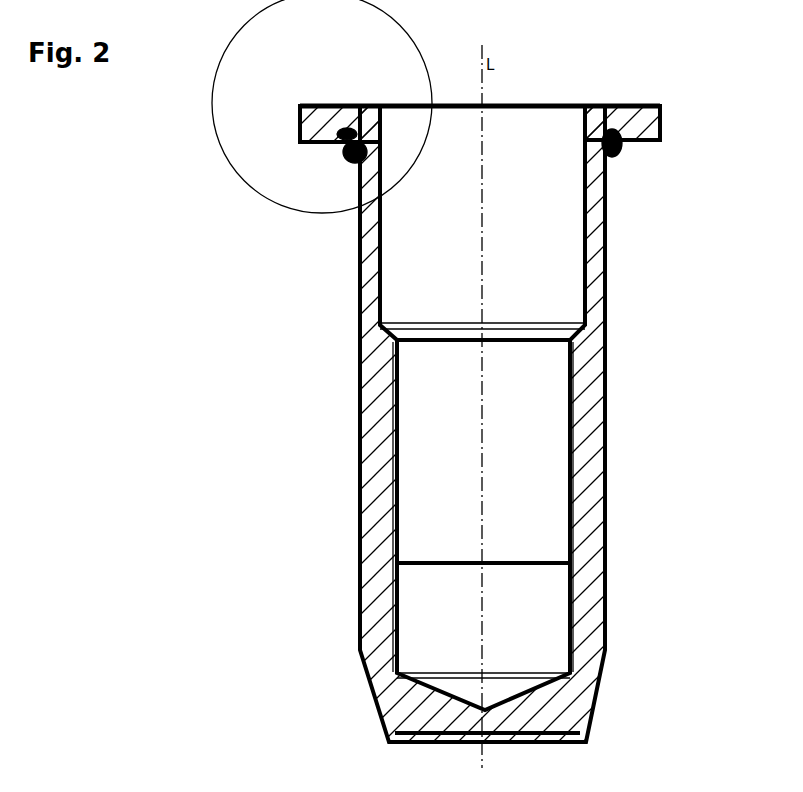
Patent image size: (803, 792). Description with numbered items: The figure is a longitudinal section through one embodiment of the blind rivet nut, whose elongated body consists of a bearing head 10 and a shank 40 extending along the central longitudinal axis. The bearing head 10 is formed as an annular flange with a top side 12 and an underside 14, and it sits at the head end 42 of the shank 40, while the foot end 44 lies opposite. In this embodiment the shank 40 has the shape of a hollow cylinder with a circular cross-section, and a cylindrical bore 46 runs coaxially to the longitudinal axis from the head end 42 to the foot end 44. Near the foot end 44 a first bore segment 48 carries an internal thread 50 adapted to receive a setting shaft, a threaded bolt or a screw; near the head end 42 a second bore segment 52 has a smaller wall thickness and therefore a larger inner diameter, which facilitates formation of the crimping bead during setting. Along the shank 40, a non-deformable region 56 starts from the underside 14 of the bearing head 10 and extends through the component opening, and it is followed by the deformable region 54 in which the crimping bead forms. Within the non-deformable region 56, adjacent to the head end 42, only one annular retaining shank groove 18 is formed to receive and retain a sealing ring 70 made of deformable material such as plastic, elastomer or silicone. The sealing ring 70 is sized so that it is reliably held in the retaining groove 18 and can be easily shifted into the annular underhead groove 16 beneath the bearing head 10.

The bearing head 10 is at (648, 117).
The top side 12 is at (614, 102).
The underside 14 is at (315, 137).
The annular underhead groove 16 is at (348, 130).
The annular retaining shank groove 18 is at (378, 147).
The shank 40 is at (595, 453).
The head end 42 is at (616, 158).
The foot end 44 is at (563, 691).
The cylindrical bore 46 is at (537, 380).
The first bore segment 48 is at (407, 430).
The internal thread 50 is at (393, 500).
The second bore segment 52 is at (545, 297).
The deformable region 54 is at (597, 248).
The non-deformable region 56 is at (607, 170).
The sealing ring 70 is at (350, 162).